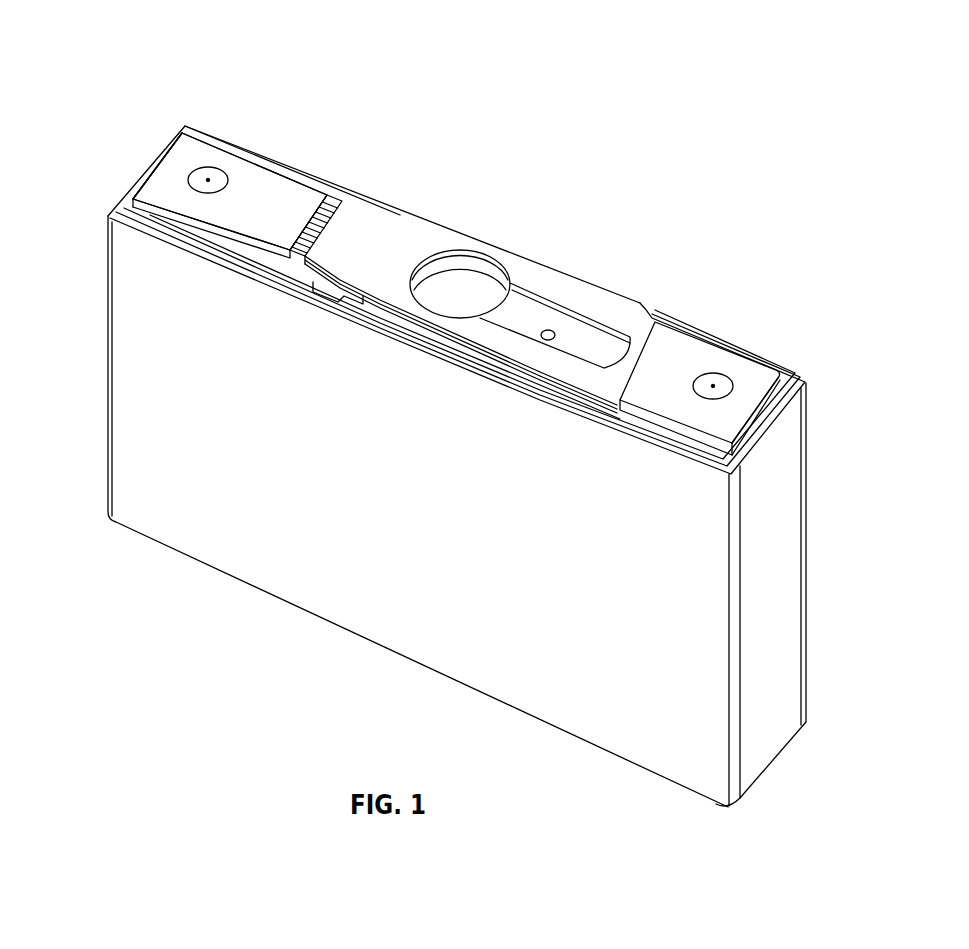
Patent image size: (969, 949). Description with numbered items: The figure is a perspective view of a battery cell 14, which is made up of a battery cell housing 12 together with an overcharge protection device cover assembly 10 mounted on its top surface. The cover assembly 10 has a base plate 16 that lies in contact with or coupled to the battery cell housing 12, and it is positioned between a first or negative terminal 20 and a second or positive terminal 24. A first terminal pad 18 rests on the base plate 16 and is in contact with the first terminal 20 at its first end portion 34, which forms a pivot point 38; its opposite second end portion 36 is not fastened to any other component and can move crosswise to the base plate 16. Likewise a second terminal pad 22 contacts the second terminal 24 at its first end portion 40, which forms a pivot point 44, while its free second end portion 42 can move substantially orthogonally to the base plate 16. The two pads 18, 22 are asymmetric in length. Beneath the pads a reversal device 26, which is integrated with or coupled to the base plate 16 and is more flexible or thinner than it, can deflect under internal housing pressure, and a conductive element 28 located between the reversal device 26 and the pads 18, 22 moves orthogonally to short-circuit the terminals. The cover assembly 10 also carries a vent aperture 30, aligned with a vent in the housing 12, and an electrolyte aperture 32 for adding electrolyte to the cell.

The overcharge protection device cover assembly 10 is at (636, 298).
The battery cell housing 12 is at (125, 460).
The battery cell 14 is at (128, 42).
The base plate 16 is at (797, 382).
The first terminal pad 18 is at (258, 186).
The first terminal 20 is at (208, 178).
The second terminal pad 22 is at (665, 353).
The second terminal 24 is at (713, 383).
The reversal device 26 is at (290, 250).
The conductive element 28 is at (297, 233).
The vent aperture 30 is at (456, 290).
The electrolyte aperture 32 is at (546, 328).
The first end portion 34 is at (172, 172).
The second end portion 36 is at (300, 205).
The pivot point 38 is at (180, 132).
The first end portion 40 is at (760, 380).
The second end portion 42 is at (349, 222).
The pivot point 44 is at (700, 397).